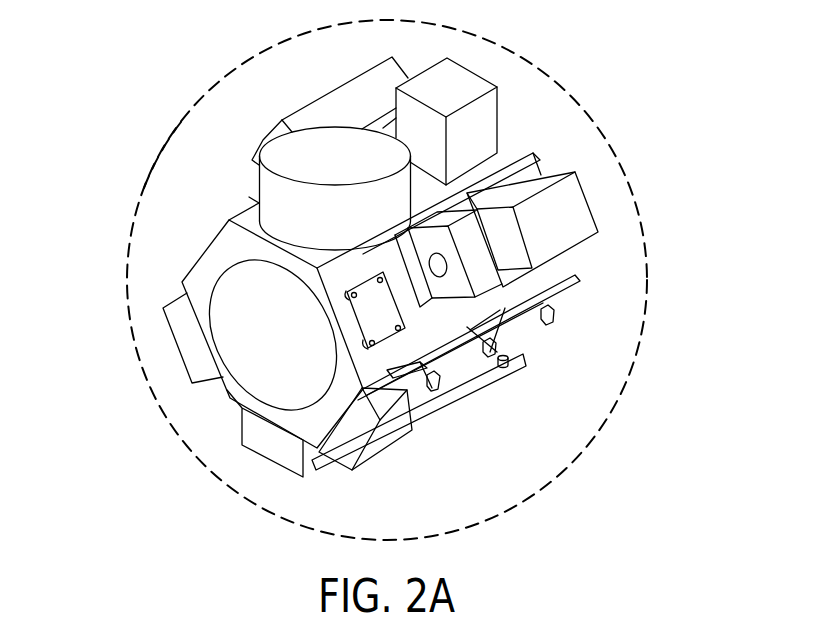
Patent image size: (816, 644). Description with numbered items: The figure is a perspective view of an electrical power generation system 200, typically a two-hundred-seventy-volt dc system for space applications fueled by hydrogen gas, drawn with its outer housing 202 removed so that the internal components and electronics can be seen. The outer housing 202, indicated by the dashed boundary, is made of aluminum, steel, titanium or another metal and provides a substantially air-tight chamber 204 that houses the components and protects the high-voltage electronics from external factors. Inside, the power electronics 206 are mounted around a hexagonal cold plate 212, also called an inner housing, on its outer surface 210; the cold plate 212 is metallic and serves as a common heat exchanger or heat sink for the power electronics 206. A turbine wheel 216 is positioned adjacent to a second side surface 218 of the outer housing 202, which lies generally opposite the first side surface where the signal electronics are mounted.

The electrical power generation system 200 is at (135, 92).
The outer housing 202 is at (275, 43).
The substantially air-tight chamber 204 is at (165, 178).
The power electronics 206 is at (573, 292).
The outer surface 210 is at (430, 333).
The cold plate 212 is at (518, 147).
The turbine wheel 216 is at (227, 383).
The second side surface 218 is at (287, 420).